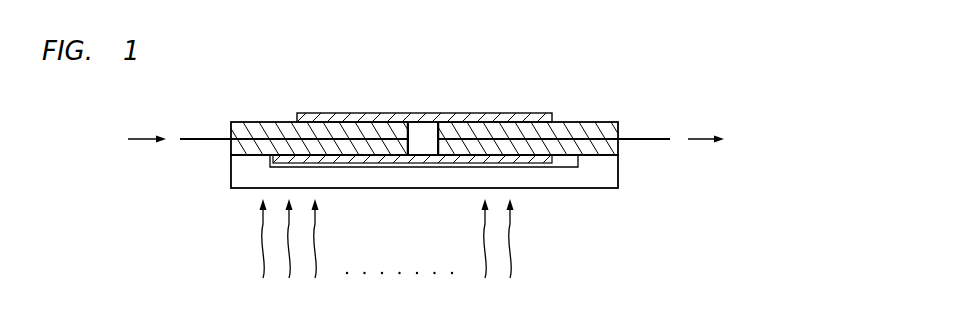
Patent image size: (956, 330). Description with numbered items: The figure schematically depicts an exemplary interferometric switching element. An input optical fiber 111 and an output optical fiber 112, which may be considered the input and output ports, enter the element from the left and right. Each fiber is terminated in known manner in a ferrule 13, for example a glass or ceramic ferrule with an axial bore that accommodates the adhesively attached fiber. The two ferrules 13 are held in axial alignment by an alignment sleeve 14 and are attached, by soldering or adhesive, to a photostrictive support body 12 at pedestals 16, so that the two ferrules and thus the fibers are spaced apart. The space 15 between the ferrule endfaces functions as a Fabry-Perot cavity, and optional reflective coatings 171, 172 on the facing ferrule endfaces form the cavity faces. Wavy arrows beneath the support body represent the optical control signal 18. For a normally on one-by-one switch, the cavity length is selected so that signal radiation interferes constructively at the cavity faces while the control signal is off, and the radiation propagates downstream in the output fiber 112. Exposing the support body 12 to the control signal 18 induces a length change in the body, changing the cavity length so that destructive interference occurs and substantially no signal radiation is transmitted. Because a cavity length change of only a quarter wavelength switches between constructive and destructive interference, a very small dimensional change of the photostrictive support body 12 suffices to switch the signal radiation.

The photostrictive support body 12 is at (258, 189).
The ferrule 13 is at (245, 123).
The alignment sleeve 14 is at (513, 113).
The space between the ferrules 15 is at (427, 138).
The pedestal 16 is at (245, 158).
The optical control signal 18 is at (265, 273).
The input optical fiber 111 is at (199, 142).
The output optical fiber 112 is at (660, 139).
The reflective coating 171 is at (405, 192).
The reflective coating 172 is at (405, 192).